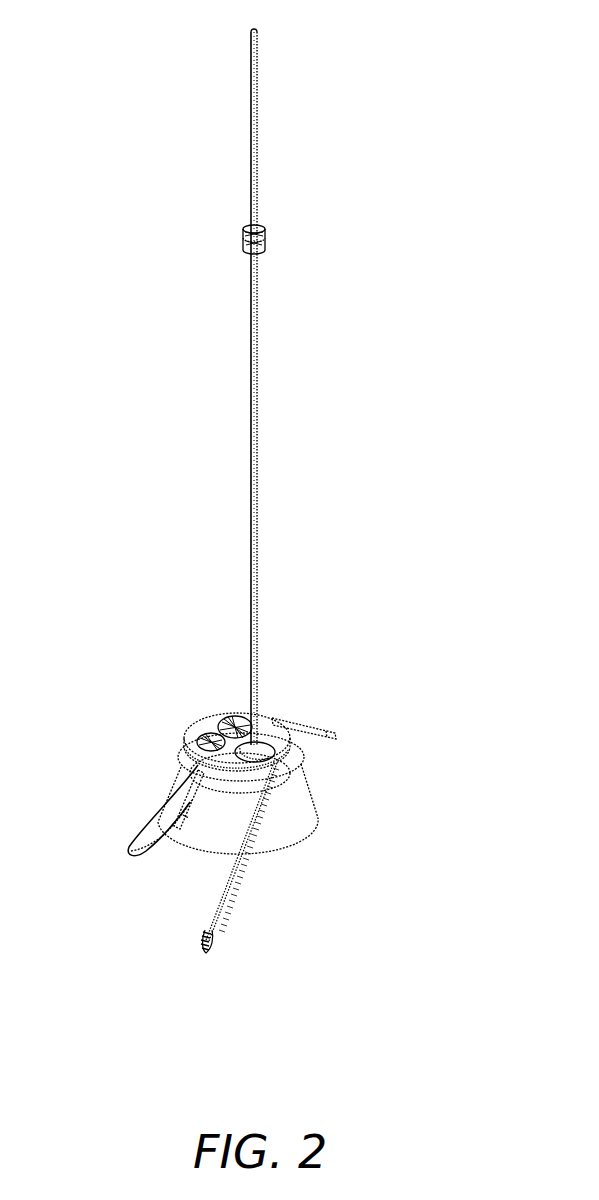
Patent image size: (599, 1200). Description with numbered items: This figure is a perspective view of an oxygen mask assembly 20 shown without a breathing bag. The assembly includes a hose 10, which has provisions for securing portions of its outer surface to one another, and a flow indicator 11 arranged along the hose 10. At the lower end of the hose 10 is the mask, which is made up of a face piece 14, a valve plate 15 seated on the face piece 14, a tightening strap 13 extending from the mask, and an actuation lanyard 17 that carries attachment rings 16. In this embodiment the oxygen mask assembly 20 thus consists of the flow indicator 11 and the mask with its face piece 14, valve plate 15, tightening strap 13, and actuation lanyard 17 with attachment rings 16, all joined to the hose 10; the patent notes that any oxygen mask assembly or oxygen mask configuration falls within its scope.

The oxygen mask assembly 20 is at (108, 118).
The hose 10 is at (258, 425).
The flow indicator 11 is at (265, 242).
The tightening strap 13 is at (135, 833).
The face piece 14 is at (300, 812).
The valve plate 15 is at (205, 723).
The attachment rings 16 is at (205, 957).
The actuation lanyard 17 is at (230, 890).